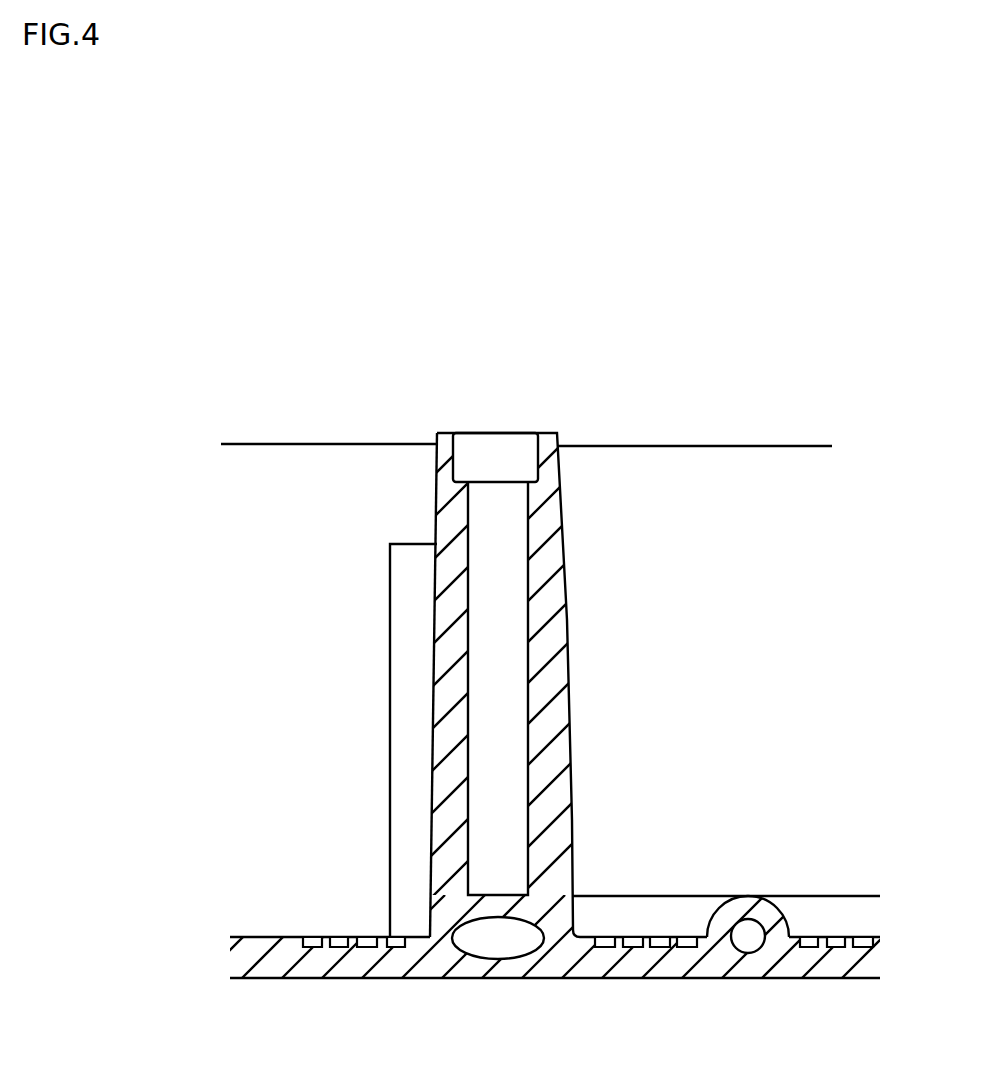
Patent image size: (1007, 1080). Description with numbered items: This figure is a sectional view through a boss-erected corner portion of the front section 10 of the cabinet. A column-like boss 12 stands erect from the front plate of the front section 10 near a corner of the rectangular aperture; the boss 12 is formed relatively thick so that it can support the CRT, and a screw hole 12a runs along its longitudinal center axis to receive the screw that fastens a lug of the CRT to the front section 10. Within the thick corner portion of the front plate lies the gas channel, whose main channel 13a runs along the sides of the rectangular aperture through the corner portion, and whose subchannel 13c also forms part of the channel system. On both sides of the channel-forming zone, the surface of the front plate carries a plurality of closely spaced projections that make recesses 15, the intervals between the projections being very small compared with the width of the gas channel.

The front section 10 is at (655, 350).
The boss 12 is at (562, 547).
The screw hole 12a is at (469, 678).
The main channel 13a is at (743, 902).
The subchannel 13c is at (515, 943).
The recess 15 is at (638, 937).